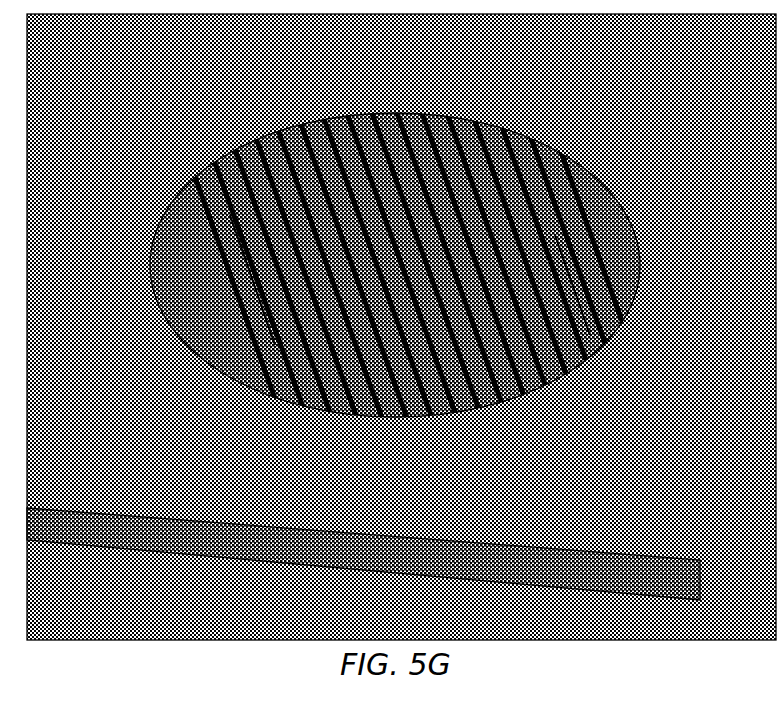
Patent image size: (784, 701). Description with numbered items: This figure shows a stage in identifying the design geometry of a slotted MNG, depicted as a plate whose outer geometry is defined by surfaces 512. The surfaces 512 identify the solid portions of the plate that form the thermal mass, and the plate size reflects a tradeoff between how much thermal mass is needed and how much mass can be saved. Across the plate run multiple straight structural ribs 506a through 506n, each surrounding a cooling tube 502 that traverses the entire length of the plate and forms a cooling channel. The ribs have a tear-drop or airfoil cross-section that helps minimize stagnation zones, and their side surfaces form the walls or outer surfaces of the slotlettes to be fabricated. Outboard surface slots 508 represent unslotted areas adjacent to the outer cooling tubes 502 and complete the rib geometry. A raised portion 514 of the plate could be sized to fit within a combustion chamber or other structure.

The cooling tube 502 is at (140, 552).
The structural rib 506a is at (233, 225).
The structural rib 506n is at (572, 337).
The outboard surface slot 508 is at (173, 279).
The surface 512 is at (172, 108).
The raised portion 514 is at (650, 192).